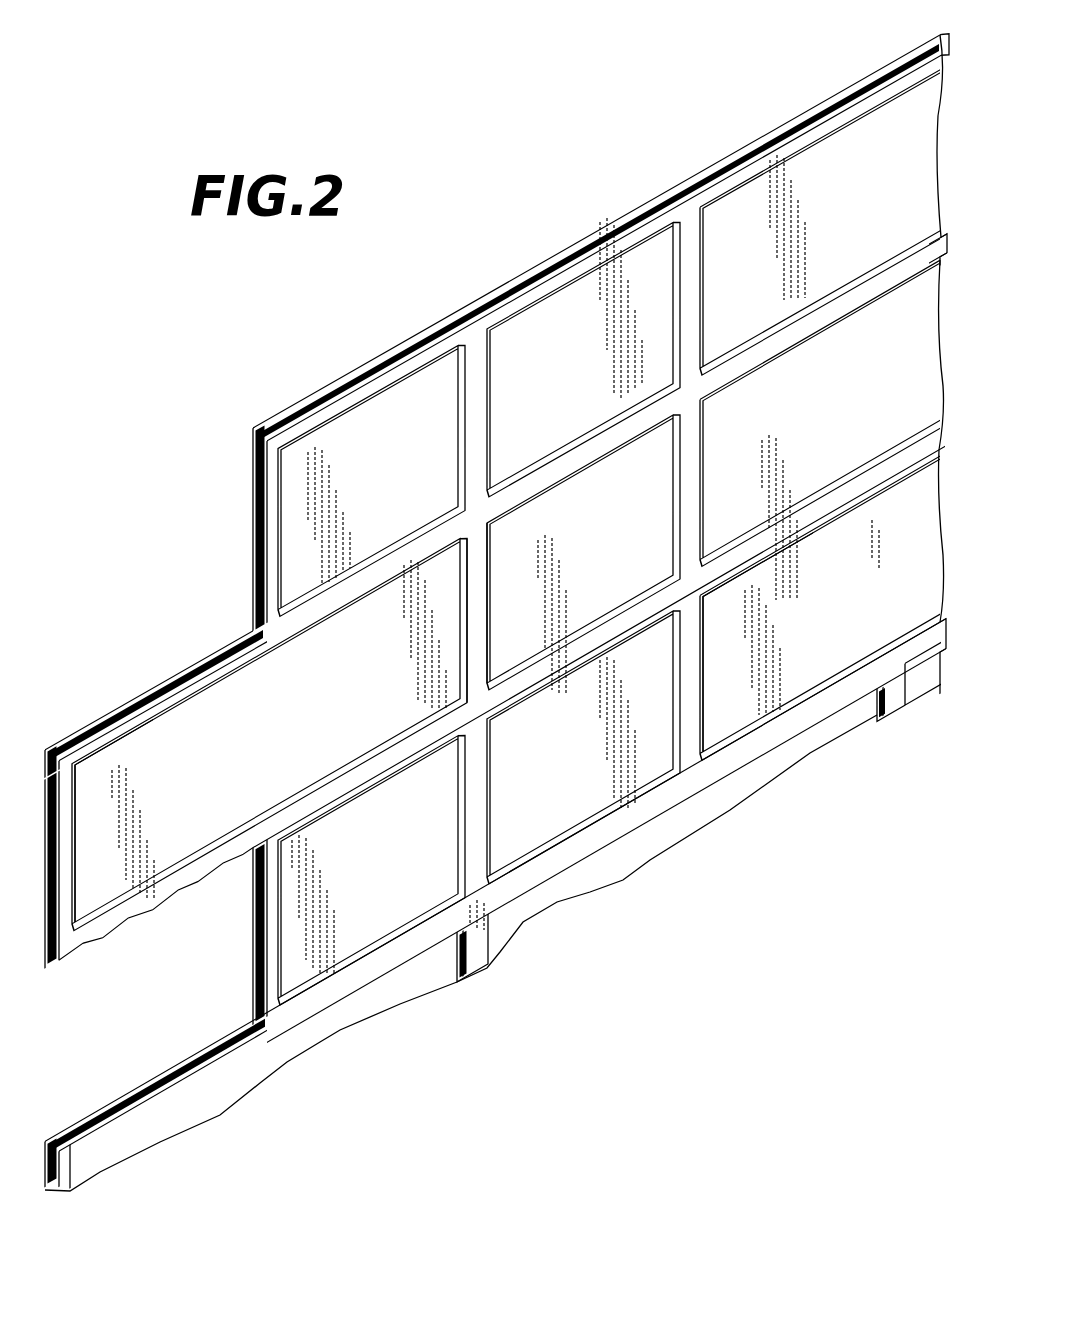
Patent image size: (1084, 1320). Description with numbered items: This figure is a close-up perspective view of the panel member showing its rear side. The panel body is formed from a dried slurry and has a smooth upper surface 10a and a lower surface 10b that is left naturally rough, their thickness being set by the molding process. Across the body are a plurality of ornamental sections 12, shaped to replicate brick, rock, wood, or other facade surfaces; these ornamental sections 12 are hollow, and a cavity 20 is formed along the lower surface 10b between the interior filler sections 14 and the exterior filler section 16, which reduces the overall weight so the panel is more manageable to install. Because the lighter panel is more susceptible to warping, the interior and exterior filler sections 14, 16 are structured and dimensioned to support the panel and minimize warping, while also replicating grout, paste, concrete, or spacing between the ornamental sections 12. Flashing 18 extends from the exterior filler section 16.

The upper surface 10a is at (497, 621).
The lower surface 10b is at (755, 807).
The ornamental sections 12 is at (508, 816).
The interior filler sections 14 is at (478, 706).
The exterior filler section 16 is at (260, 525).
The flashing 18 is at (601, 241).
The cavity 20 is at (104, 890).